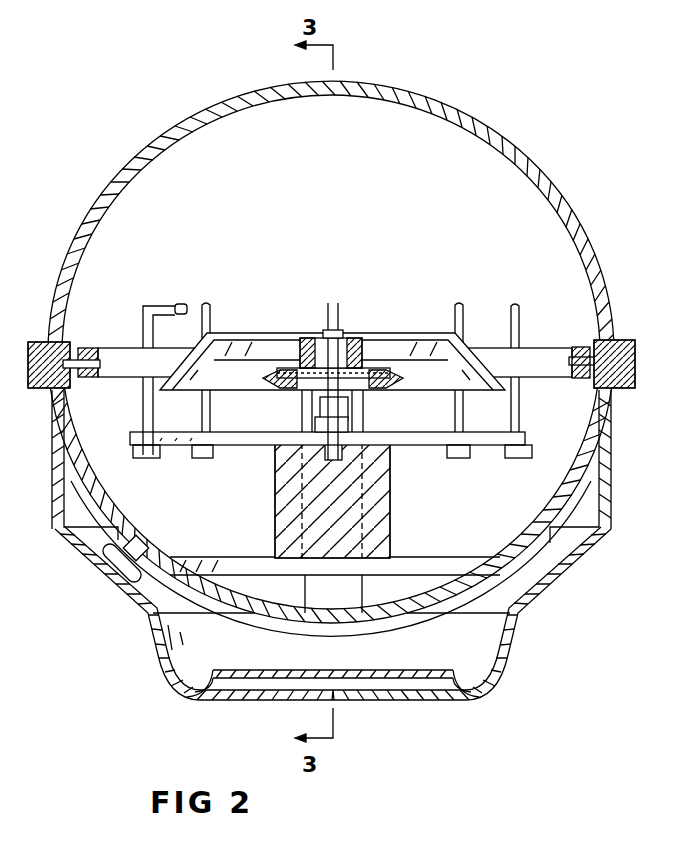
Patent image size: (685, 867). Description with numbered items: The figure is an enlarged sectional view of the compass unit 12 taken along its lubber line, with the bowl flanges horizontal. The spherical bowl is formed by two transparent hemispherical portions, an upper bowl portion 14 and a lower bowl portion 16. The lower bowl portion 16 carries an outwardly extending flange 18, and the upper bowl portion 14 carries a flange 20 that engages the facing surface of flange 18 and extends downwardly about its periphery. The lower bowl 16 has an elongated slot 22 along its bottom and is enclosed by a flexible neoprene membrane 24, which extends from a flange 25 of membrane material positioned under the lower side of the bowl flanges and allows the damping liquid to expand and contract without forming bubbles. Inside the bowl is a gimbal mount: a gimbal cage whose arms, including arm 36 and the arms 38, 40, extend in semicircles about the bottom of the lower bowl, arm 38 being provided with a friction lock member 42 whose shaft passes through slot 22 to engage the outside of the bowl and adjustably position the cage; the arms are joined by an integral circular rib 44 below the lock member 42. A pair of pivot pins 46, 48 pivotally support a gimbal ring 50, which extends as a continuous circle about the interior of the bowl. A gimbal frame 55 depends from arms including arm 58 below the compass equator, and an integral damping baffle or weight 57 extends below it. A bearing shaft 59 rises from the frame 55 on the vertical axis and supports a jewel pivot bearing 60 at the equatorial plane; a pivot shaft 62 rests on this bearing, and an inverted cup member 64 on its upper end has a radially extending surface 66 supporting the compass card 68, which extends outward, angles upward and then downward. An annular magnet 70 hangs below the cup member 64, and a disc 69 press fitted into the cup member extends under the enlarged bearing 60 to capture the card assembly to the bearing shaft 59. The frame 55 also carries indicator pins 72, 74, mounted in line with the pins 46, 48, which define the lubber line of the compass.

The compass unit 12 is at (346, 352).
The upper hemispherical bowl portion 14 is at (590, 231).
The lower hemispherical bowl portion 16 is at (587, 495).
The flange of lower bowl portion 18 is at (630, 368).
The flange of upper bowl portion 20 is at (606, 340).
The elongated slot 22 is at (362, 630).
The flexible membrane 24 is at (540, 593).
The membrane flange 25 is at (629, 392).
The gimbal cage arm 36 is at (304, 594).
The gimbal cage arm 38 is at (103, 484).
The gimbal cage arm 40 is at (556, 482).
The friction lock member 42 is at (126, 583).
The circular rib 44 is at (223, 556).
The pivot pin 46 is at (103, 365).
The pivot pin 48 is at (569, 361).
The gimbal ring 50 is at (114, 348).
The gimbal frame 55 is at (223, 433).
The damping baffle or weight 57 is at (274, 488).
The arm 58 is at (355, 422).
The bearing shaft 59 is at (352, 378).
The jewel pivot bearing 60 is at (347, 338).
The pivot shaft 62 is at (326, 343).
The inverted cup member 64 is at (395, 372).
The radially extending surface 66 is at (370, 360).
The compass card 68 is at (400, 333).
The disc 69 is at (318, 374).
The annular magnet 70 is at (267, 377).
The indicator pin 72 is at (166, 300).
The indicator pin 74 is at (517, 300).